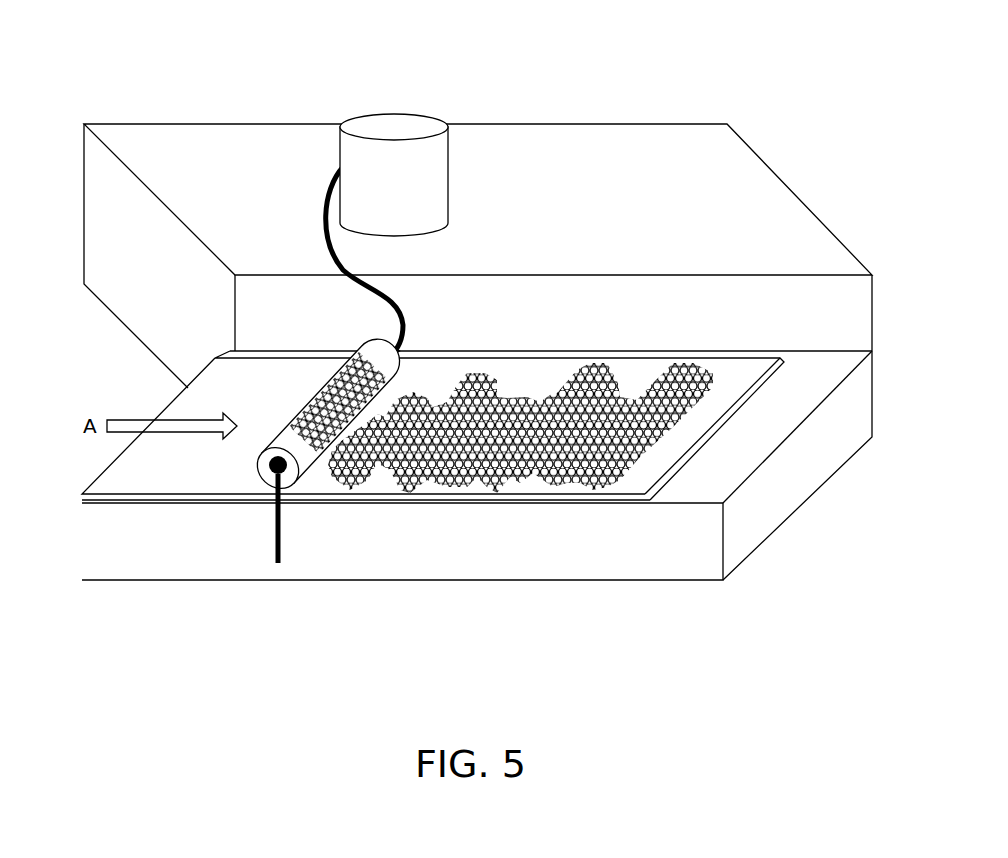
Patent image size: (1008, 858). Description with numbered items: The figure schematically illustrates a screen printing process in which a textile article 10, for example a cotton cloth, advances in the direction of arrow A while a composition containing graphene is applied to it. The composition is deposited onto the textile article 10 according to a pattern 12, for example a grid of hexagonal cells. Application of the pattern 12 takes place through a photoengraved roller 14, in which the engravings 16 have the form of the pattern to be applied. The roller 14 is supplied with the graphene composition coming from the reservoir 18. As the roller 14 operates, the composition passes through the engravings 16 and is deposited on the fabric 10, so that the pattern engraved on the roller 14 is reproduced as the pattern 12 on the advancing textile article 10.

The textile article 10 is at (680, 438).
The pattern 12 is at (597, 463).
The photoengraved roller 14 is at (268, 438).
The engravings 16 is at (333, 413).
The reservoir 18 is at (395, 127).